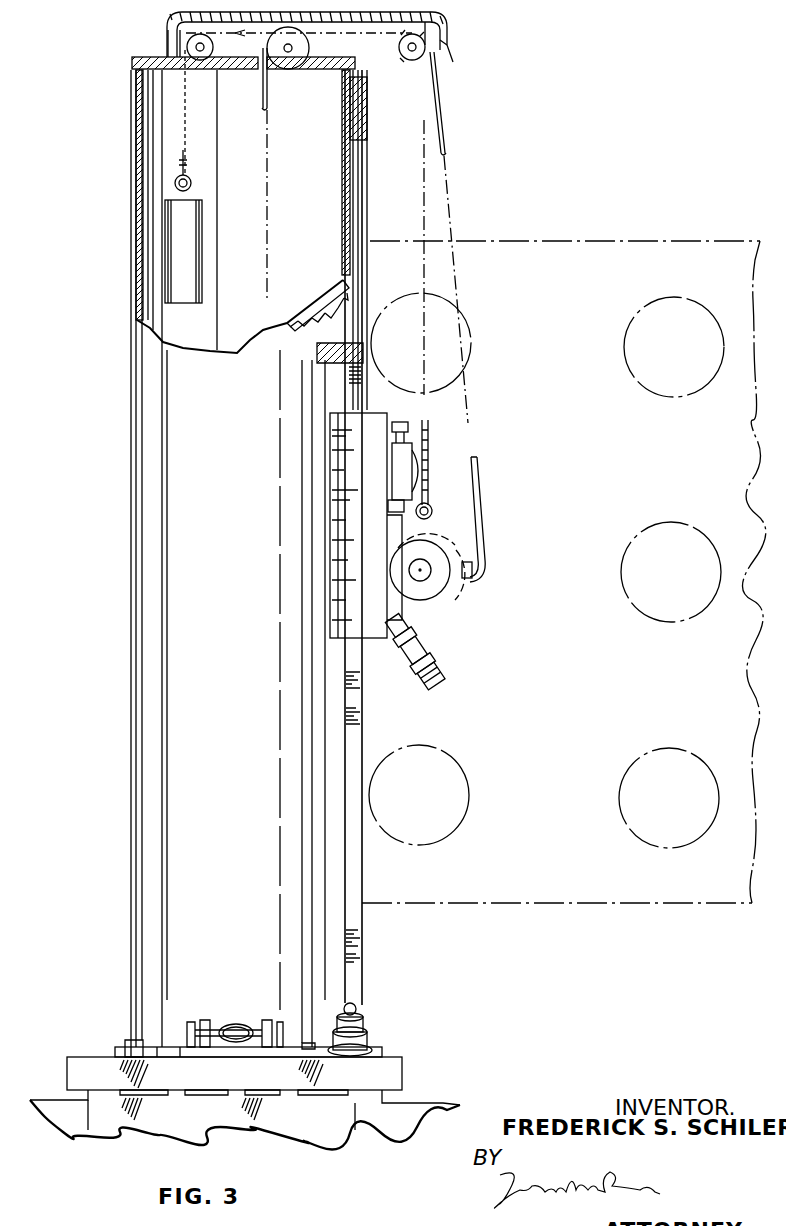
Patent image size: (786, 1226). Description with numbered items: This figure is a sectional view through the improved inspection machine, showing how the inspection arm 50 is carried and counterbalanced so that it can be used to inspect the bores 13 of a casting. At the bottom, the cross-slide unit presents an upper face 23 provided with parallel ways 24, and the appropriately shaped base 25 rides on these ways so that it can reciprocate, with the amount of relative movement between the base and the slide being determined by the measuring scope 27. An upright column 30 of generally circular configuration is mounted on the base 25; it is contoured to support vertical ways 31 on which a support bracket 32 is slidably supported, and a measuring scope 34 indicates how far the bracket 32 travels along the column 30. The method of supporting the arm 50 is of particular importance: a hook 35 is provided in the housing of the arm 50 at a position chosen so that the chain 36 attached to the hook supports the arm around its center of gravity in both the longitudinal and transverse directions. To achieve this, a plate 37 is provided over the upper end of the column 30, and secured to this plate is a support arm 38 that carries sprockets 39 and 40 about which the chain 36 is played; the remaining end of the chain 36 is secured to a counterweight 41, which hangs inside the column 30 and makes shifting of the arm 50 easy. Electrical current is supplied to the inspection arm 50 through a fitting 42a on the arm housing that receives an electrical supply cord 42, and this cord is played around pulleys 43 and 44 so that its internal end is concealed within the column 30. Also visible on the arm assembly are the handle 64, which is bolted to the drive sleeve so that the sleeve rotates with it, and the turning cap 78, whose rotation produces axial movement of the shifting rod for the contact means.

The bores 13 is at (628, 330).
The upper face 23 is at (436, 1105).
The parallel ways 24 is at (100, 1097).
The base 25 is at (402, 1066).
The measuring scope 27 is at (242, 1020).
The upright column 30 is at (130, 642).
The vertical ways 31 is at (362, 286).
The support bracket 32 is at (340, 577).
The measuring scope 34 is at (405, 485).
The hook 35 is at (430, 508).
The chain 36 is at (428, 448).
The plate 37 is at (141, 60).
The support arm 38 is at (362, 58).
The sprocket 39 is at (415, 62).
The sprocket 40 is at (192, 42).
The counterweight 41 is at (184, 237).
The electrical supply cord 42 is at (484, 488).
The fitting 42a is at (474, 582).
The pulley 43 is at (430, 88).
The pulley 44 is at (290, 62).
The inspection arm 50 is at (450, 522).
The handle 64 is at (444, 598).
The turning cap 78 is at (430, 570).